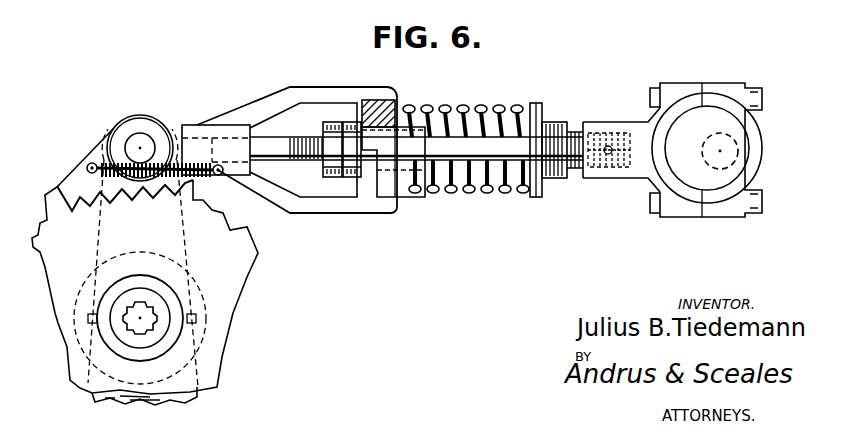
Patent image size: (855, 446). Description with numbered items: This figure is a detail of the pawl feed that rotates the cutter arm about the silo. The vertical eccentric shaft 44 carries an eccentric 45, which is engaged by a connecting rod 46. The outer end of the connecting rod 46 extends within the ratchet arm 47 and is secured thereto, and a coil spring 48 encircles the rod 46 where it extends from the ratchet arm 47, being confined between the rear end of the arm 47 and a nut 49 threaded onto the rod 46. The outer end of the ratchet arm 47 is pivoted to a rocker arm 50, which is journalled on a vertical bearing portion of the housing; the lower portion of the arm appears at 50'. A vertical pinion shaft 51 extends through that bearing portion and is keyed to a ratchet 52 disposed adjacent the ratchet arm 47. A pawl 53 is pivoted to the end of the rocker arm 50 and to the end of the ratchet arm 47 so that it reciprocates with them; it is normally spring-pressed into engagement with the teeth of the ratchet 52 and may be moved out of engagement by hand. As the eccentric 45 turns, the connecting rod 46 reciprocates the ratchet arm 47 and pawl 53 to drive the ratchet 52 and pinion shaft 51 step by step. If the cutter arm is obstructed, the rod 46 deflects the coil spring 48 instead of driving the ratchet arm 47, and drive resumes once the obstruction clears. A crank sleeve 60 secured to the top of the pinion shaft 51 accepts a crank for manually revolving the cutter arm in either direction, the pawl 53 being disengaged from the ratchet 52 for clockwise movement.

The eccentric shaft 44 is at (725, 147).
The eccentric 45 is at (695, 127).
The connecting rod 46 is at (576, 130).
The ratchet arm 47 is at (262, 93).
The coil spring 48 is at (482, 103).
The nut 49 is at (548, 121).
The rocker arm 50 is at (162, 227).
The lever arm lower end 50' is at (175, 398).
The pinion shaft 51 is at (142, 317).
The ratchet 52 is at (250, 253).
The pawl 53 is at (92, 150).
The crank sleeve 60 is at (177, 332).